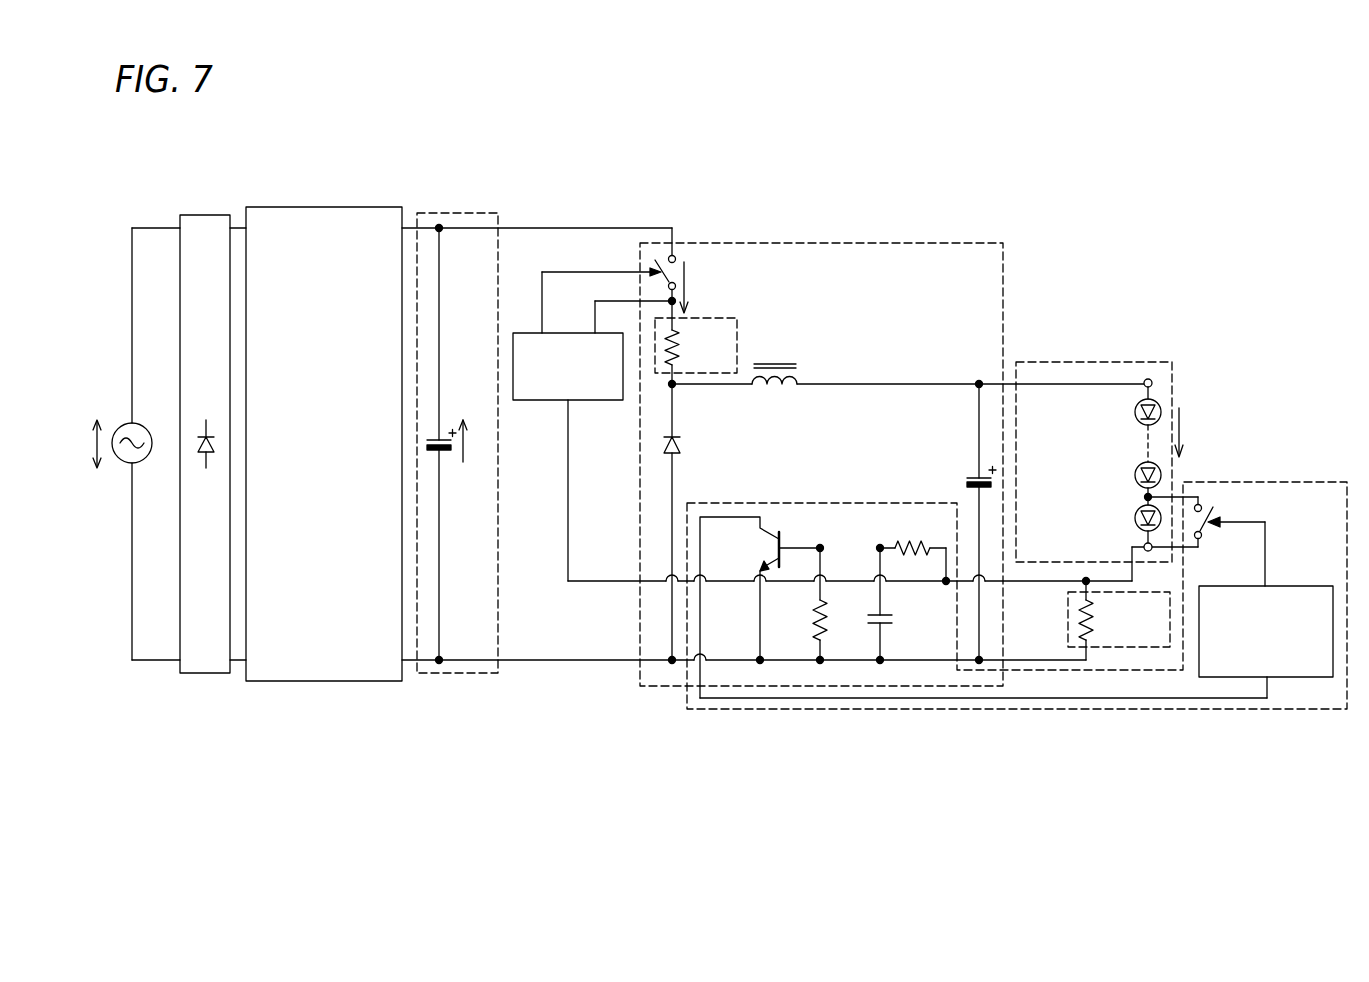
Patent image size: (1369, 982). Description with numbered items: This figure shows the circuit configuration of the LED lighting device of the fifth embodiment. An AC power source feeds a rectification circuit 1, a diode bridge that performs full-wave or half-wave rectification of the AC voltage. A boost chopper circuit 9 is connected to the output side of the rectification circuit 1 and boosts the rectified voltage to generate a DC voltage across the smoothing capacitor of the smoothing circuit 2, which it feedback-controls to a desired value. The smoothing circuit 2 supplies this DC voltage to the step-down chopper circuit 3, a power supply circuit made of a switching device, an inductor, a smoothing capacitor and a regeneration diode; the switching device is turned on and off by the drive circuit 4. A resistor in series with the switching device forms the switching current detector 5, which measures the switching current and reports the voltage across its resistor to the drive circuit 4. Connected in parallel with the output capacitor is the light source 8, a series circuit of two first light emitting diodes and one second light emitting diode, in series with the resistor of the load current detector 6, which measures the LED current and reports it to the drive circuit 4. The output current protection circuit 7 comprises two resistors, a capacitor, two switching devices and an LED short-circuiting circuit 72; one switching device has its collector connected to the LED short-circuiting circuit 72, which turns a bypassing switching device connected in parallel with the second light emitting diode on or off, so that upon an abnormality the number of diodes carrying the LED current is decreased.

The rectification circuit 1 is at (206, 215).
The smoothing circuit 2 is at (453, 213).
The step-down chopper circuit 3 is at (892, 441).
The drive circuit 4 is at (597, 393).
The switching current detector 5 is at (738, 329).
The load current detector 6 is at (1068, 619).
The output current protection circuit 7 is at (1017, 583).
The light source 8 is at (1096, 362).
The boost chopper circuit 9 is at (323, 207).
The LED short-circuiting circuit 72 is at (1302, 590).